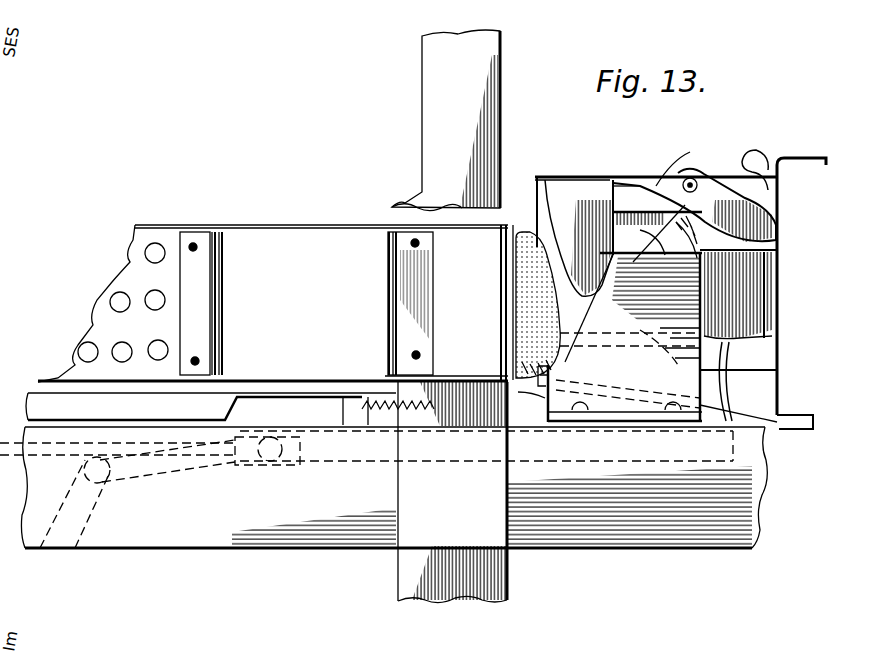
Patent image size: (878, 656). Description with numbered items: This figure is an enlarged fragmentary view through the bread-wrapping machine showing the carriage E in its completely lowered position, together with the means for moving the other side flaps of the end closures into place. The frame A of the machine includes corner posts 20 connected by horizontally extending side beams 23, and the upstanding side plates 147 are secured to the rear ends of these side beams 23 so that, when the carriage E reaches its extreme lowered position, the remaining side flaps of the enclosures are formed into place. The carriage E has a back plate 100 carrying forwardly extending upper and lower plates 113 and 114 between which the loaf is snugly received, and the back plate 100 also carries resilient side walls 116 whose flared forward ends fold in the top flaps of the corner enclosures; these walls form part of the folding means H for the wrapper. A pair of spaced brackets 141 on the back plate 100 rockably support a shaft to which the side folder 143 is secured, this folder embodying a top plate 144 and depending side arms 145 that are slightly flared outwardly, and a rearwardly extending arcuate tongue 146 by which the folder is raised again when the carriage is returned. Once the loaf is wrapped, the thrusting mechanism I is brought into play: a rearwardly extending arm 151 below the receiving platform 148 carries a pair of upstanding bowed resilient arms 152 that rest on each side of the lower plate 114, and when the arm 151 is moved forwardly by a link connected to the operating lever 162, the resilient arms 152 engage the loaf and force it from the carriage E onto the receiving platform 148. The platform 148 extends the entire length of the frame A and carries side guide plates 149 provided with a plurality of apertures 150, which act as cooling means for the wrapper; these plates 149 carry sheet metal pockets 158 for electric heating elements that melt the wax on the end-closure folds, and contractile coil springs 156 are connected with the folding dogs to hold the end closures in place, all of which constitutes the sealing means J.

The frame A is at (482, 108).
The means for sealing the bread J is at (280, 246).
The side guide plates 149 is at (162, 233).
The apertures 150 is at (118, 292).
The sheet metal pockets 158 is at (332, 246).
The contractile coil springs 156 is at (395, 376).
The receiving platform 148 is at (300, 397).
The side beams 23 is at (198, 548).
The operating lever 162 is at (60, 550).
The rearwardly extending arm 151 is at (730, 452).
The corner posts 20 is at (488, 598).
The depending side arms 145 is at (523, 210).
The carriage E is at (677, 216).
The brackets 141 is at (742, 200).
The arcuate tongue 146 is at (752, 160).
The top plate 144 is at (648, 202).
The side folder 143 is at (575, 196).
The upper plate 113 is at (682, 180).
The means for folding the paper H is at (836, 291).
The resilient side walls 116 is at (712, 270).
The back plate 100 is at (780, 276).
The upstanding side plates 147 is at (732, 320).
The lower plate 114 is at (757, 370).
The bowed resilient arms 152 is at (722, 394).
The means for thrusting the bread I is at (738, 402).